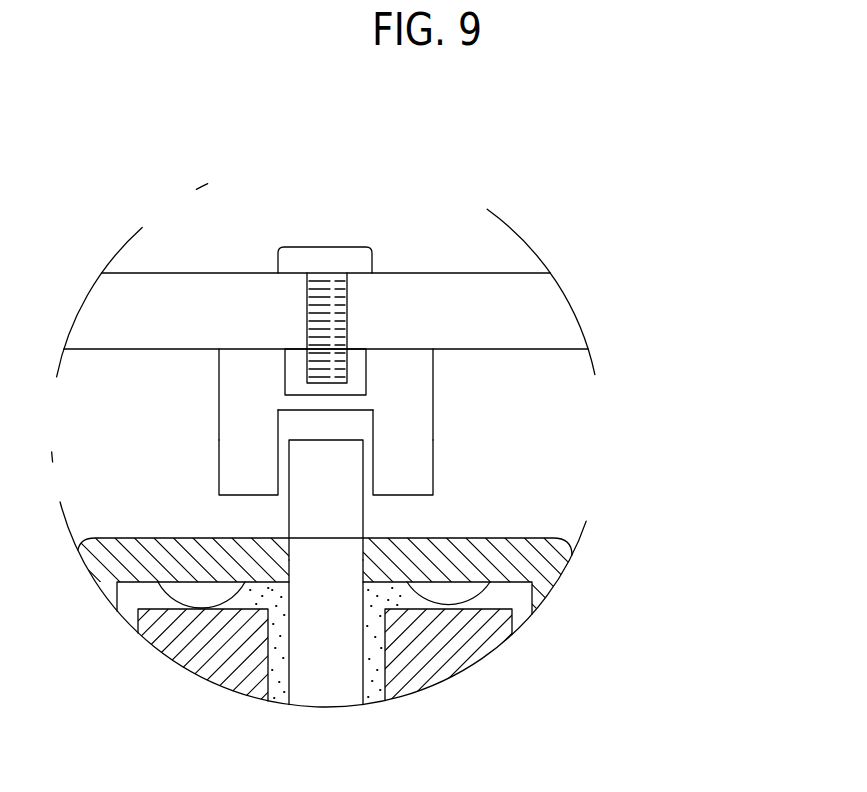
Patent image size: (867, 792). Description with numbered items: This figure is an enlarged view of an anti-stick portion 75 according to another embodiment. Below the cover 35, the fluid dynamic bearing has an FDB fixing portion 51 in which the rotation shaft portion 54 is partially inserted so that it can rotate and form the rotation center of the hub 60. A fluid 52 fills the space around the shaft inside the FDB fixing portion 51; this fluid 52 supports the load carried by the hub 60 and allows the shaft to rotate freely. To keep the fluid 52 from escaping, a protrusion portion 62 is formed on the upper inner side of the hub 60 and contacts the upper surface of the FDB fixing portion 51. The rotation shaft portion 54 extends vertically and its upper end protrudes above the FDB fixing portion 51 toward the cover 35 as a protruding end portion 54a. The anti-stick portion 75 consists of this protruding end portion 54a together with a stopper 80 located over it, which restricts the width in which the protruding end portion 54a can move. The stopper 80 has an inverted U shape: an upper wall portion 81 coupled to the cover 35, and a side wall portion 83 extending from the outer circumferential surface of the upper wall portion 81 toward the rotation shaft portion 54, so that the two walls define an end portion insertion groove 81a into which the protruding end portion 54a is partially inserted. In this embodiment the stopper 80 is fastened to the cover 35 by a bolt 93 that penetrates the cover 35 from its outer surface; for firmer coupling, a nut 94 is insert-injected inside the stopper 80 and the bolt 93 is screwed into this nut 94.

The cover 35 is at (442, 308).
The bolt 93 is at (330, 268).
The nut 94 is at (290, 372).
The stopper 80 is at (420, 422).
The upper wall portion 81 is at (389, 394).
The end portion insertion groove 81a is at (296, 418).
The side wall portion 83 is at (408, 450).
The anti-stick portion 75 is at (447, 454).
The protruding end portion 54a is at (323, 495).
The rotation shaft portion 54 is at (327, 683).
The hub 60 is at (517, 558).
The protrusion portion 62 is at (448, 602).
The FDB fixing portion 51 is at (247, 683).
The fluid 52 is at (373, 685).